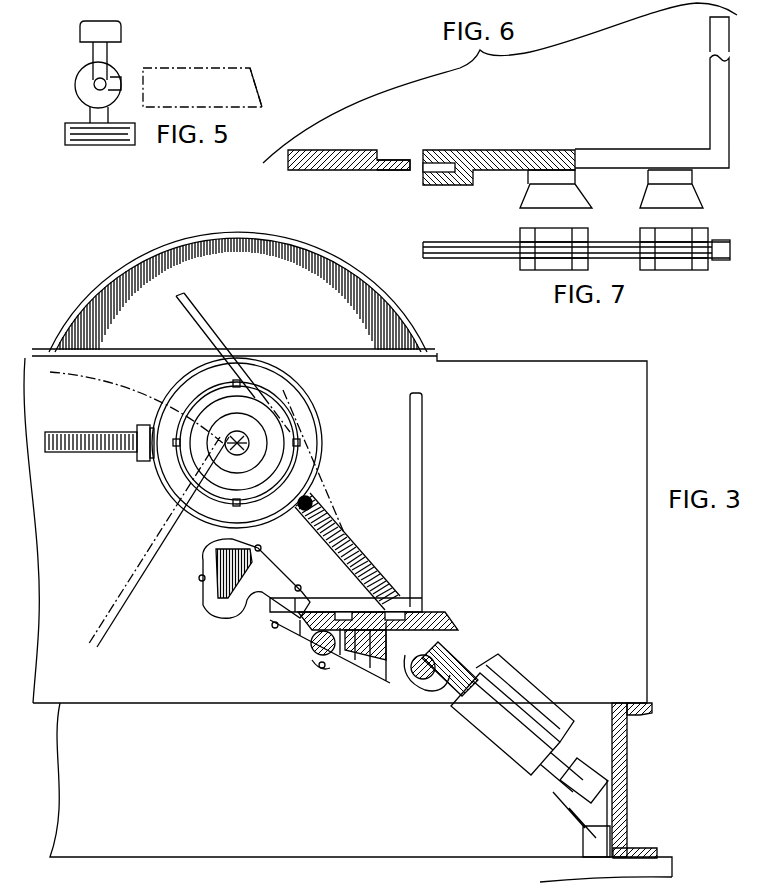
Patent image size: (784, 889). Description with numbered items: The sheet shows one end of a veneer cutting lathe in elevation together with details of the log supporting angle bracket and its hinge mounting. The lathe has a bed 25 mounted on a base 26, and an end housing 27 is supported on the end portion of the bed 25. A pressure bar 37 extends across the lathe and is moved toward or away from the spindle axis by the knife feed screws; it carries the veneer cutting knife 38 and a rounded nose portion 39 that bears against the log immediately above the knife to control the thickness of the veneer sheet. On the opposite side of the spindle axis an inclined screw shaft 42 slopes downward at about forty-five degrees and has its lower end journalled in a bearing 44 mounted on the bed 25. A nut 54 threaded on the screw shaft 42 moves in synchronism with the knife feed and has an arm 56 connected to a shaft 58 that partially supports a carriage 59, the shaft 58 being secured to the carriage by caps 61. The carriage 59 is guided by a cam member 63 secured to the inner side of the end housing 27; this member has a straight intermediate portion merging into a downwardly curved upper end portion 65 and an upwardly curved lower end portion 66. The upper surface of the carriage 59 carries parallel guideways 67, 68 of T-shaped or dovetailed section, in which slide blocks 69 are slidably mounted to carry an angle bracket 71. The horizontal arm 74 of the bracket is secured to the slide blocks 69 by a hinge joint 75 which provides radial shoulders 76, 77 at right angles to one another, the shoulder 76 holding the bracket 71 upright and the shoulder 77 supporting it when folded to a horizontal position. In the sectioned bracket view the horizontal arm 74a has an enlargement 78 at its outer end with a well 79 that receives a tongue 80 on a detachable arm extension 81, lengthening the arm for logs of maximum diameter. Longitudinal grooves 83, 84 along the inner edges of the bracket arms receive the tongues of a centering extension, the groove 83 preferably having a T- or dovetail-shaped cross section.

In FIG. 3, the bed 25 is at (628, 825).
In FIG. 3, the base 26 is at (672, 866).
In FIG. 3, the end housing 27 is at (490, 361).
In FIG. 3, the pressure bar 37 is at (165, 418).
In FIG. 3, the veneer cutting knife 38 is at (213, 452).
In FIG. 3, the rounded nose portion 39 is at (233, 438).
In FIG. 3, the screw shaft 42 is at (352, 553).
In FIG. 3, the bearing 44 is at (597, 764).
In FIG. 3, the nut 54 is at (541, 672).
In FIG. 3, the arm 56 is at (458, 690).
In FIG. 3, the shaft 58 is at (443, 650).
In FIG. 3, the carriage 59 is at (378, 678).
In FIG. 3, the caps 61 is at (418, 690).
In FIG. 3, the cam member 63 is at (268, 562).
In FIG. 3, the upper end portion 65 is at (214, 592).
In FIG. 3, the lower end portion 66 is at (327, 672).
In FIG. 3, the guideway 67 is at (352, 605).
In FIG. 3, the guideway 68 is at (341, 613).
In FIG. 5, the slide blocks 69 is at (80, 145).
In FIG. 7, the slide blocks 69 is at (640, 232).
In FIG. 5, the angle bracket 71 is at (232, 80).
In FIG. 3, the angle bracket 71 is at (422, 486).
In FIG. 5, the arm 74 is at (80, 32).
In FIG. 6, the horizontal arm 74a is at (629, 160).
In FIG. 5, the hinge joint 75 is at (76, 85).
In FIG. 5, the shoulder 76 is at (105, 66).
In FIG. 5, the shoulder 77 is at (143, 85).
In FIG. 6, the enlargement 78 is at (448, 185).
In FIG. 6, the well 79 is at (445, 162).
In FIG. 6, the tongue 80 is at (400, 160).
In FIG. 6, the arm extension 81 is at (345, 150).
In FIG. 7, the groove 83 is at (714, 245).
In FIG. 7, the groove 84 is at (485, 243).